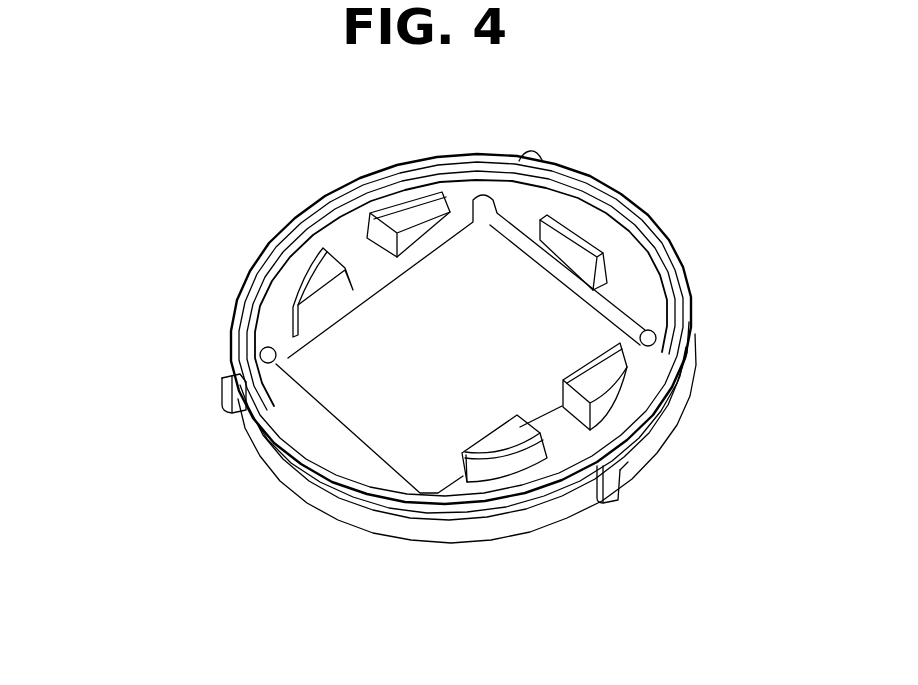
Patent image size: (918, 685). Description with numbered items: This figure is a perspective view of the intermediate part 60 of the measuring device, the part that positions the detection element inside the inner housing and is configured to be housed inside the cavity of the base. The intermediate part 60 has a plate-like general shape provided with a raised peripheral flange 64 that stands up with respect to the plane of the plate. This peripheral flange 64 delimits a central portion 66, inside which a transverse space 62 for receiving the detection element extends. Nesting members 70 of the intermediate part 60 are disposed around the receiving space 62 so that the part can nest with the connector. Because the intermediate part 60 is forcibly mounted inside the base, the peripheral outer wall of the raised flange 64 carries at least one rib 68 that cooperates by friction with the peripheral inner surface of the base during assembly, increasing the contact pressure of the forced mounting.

The intermediate part 60 is at (646, 170).
The transverse space 62 is at (367, 442).
The raised peripheral flange 64 is at (270, 232).
The central portion 66 is at (628, 305).
The rib 68 is at (624, 483).
The nesting members 70 is at (608, 394).